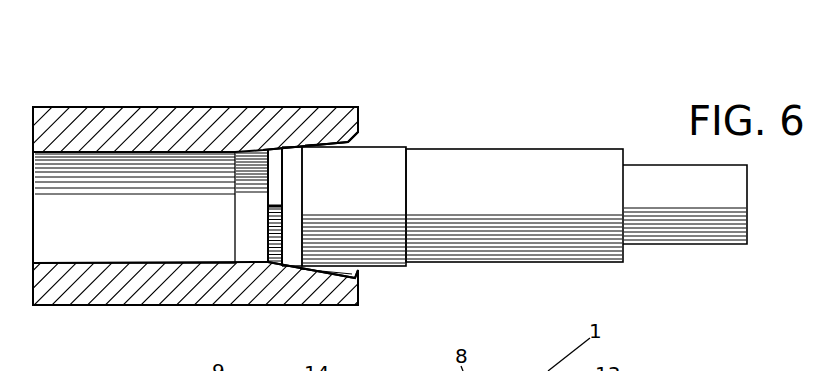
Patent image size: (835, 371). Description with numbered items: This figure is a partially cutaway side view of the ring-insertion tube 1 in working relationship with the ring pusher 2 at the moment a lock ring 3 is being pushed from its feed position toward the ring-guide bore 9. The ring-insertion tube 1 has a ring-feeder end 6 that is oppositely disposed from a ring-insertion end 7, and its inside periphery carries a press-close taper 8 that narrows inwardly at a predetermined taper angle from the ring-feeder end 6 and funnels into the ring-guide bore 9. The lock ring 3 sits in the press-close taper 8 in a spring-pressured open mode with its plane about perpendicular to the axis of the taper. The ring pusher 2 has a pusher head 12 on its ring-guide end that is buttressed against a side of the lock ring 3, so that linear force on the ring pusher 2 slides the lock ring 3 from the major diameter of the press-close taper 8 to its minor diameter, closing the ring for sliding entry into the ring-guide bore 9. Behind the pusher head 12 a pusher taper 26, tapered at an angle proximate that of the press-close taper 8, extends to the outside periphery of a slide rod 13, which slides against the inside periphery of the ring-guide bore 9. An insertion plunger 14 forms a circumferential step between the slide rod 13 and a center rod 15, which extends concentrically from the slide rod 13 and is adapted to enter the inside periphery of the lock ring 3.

The ring-insertion tube 1 is at (380, 75).
The ring pusher 2 is at (492, 100).
The lock ring 3 is at (275, 188).
The ring-feeder end 6 is at (358, 306).
The ring-insertion end 7 is at (36, 306).
The press-close taper 8 is at (298, 268).
The ring-guide bore 9 is at (151, 225).
The pusher head 12 is at (288, 190).
The slide rod 13 is at (520, 211).
The insertion plunger 14 is at (624, 263).
The center rod 15 is at (700, 205).
The pusher taper 26 is at (353, 210).